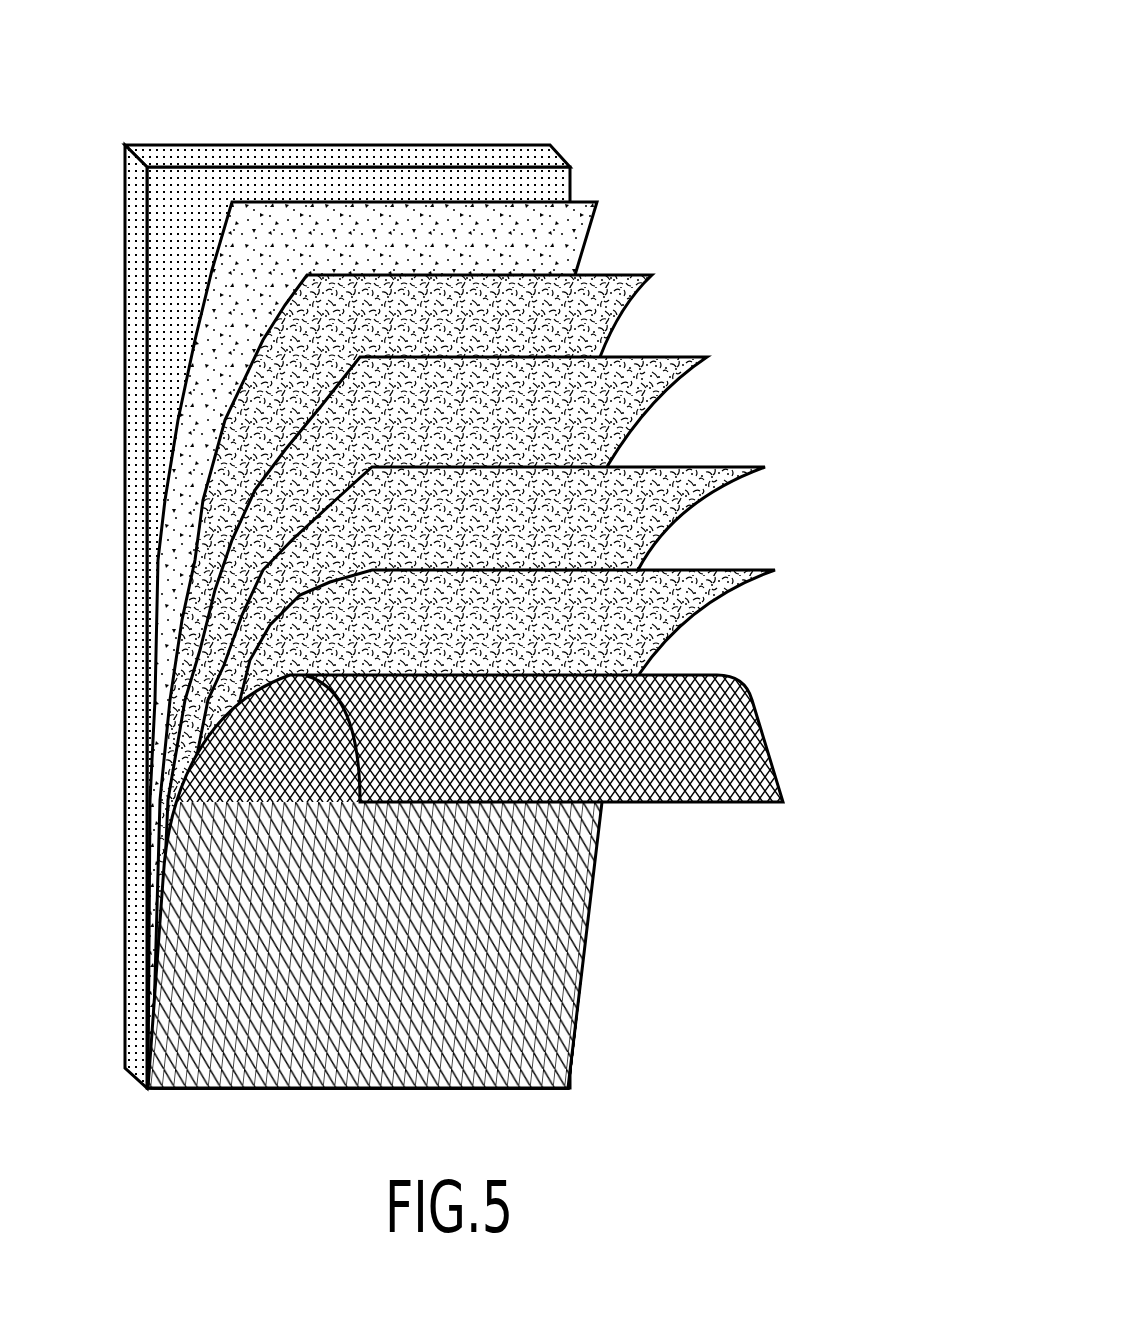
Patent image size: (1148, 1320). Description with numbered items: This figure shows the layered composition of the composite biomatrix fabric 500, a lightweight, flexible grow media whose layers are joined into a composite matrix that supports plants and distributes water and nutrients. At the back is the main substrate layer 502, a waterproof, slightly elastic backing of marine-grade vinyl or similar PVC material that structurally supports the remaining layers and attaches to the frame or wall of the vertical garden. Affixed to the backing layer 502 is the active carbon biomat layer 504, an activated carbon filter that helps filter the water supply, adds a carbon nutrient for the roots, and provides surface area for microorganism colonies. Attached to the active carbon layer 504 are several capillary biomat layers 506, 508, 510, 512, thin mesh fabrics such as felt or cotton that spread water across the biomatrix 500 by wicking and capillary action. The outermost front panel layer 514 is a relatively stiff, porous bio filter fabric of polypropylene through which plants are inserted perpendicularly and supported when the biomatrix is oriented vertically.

The composite biomatrix fabric 500 is at (498, 549).
The main substrate layer 502 is at (571, 180).
The active carbon biomat layer 504 is at (593, 232).
The capillary biomat layer 506 is at (653, 285).
The capillary biomat layer 508 is at (700, 365).
The capillary biomat layer 510 is at (765, 480).
The capillary biomat layer 512 is at (775, 585).
The front panel layer 514 is at (770, 737).